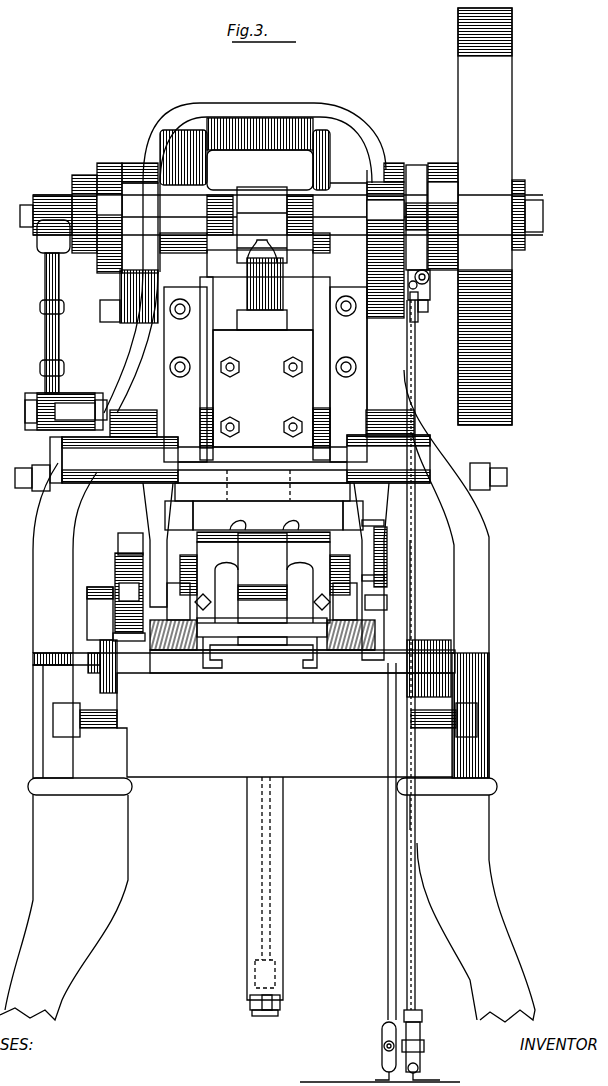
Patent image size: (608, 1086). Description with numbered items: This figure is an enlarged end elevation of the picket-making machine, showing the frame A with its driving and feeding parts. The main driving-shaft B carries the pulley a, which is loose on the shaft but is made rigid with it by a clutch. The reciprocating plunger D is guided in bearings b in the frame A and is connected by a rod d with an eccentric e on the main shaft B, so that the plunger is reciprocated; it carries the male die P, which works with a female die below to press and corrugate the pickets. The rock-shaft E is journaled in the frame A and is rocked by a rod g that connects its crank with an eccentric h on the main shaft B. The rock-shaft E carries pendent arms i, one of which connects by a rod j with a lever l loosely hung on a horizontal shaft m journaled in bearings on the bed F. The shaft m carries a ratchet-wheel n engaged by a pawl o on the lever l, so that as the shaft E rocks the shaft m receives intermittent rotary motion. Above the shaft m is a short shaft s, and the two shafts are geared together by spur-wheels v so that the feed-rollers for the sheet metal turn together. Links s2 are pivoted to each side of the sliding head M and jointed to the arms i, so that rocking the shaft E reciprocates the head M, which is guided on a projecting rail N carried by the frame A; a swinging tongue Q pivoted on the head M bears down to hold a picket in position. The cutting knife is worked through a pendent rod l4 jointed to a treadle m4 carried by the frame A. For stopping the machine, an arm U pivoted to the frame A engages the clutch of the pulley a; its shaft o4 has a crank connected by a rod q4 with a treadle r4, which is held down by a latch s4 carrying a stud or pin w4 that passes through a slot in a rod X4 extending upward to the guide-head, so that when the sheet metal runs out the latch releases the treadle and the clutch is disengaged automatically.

The frame A is at (267, 556).
The pulley a is at (485, 216).
The main driving-shaft B is at (412, 240).
The bearings b is at (269, 356).
The rod d is at (262, 294).
The reciprocating plunger D is at (263, 388).
The rock-shaft E is at (275, 444).
The eccentric e is at (281, 220).
The bed F is at (302, 663).
The rod g is at (66, 325).
The eccentric h is at (100, 243).
The pendent arms i is at (266, 571).
The rod j is at (140, 540).
The lever l is at (118, 568).
The pawl o is at (129, 593).
The ratchet-wheel n is at (129, 642).
The horizontal shaft m is at (386, 602).
The short shaft s is at (387, 557).
The spur-wheels v is at (386, 520).
The links s2 is at (262, 601).
The male die P is at (264, 515).
The swinging tongue Q is at (275, 580).
The sliding head M is at (262, 634).
The projecting rail N is at (260, 652).
The arm U is at (427, 279).
The shaft o4 is at (428, 305).
The rod q4 is at (423, 655).
The rod X4 is at (388, 950).
The pendent rod l4 is at (265, 883).
The treadle m4 is at (265, 1016).
The latch s4 is at (410, 1009).
The stud or pin w4 is at (387, 1046).
The treadle r4 is at (424, 1038).